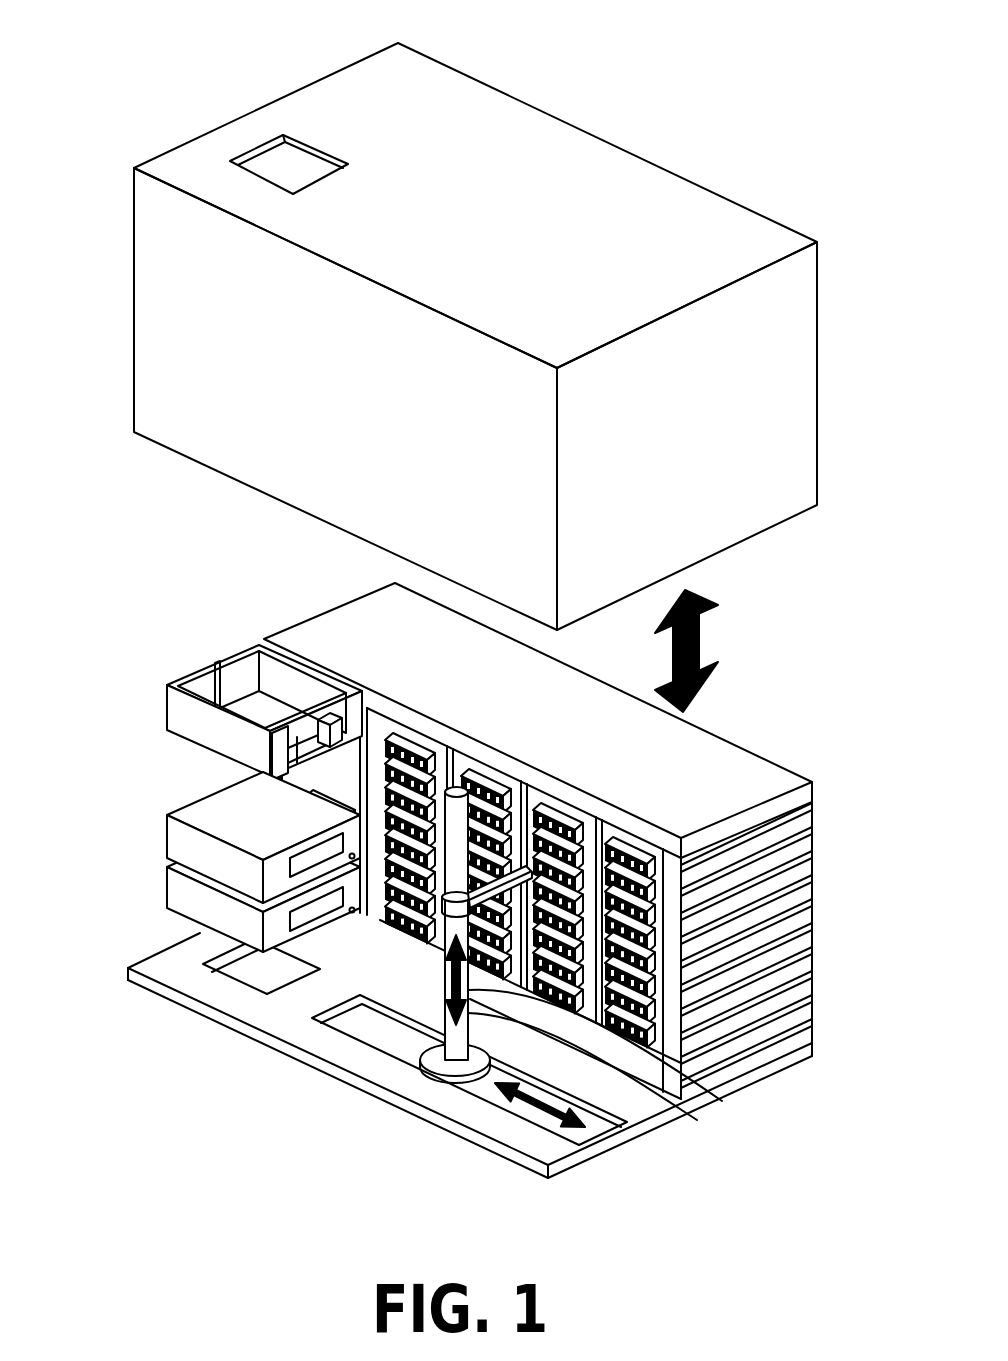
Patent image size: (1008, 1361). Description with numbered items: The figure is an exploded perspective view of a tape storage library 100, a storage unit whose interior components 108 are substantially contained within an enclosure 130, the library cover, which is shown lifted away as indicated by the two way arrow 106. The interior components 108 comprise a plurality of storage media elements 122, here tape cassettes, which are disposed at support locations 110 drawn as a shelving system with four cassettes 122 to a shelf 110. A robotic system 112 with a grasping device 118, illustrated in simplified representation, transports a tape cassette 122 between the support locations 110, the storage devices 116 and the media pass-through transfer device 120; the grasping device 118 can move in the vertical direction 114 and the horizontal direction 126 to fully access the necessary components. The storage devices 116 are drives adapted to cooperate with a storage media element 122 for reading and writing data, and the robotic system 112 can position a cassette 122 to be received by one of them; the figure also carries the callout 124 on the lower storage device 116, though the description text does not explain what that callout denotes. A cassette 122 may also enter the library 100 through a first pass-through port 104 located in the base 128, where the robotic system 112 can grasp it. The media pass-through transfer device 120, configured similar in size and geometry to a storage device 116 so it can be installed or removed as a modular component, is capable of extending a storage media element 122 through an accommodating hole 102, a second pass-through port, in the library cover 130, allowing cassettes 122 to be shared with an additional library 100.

The tape storage library 100 is at (620, 64).
The accommodating hole 102 is at (293, 171).
The first pass-through port 104 is at (251, 981).
The two way arrow 106 is at (700, 645).
The interior components 108 is at (721, 719).
The support locations 110 is at (762, 855).
The robotic system 112 is at (697, 1120).
The vertical direction 114 is at (722, 1101).
The storage devices 116 is at (255, 960).
The grasping device 118 is at (518, 866).
The media pass-through transfer device 120 is at (251, 677).
The storage media elements 122 is at (653, 856).
The drive slot 124 is at (318, 922).
The horizontal direction 126 is at (567, 1130).
The base 128 is at (308, 1067).
The enclosure 130 is at (674, 172).